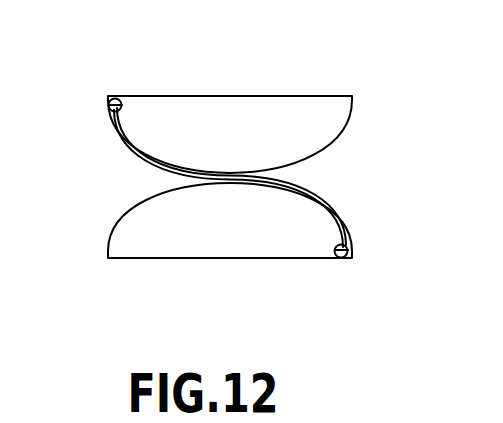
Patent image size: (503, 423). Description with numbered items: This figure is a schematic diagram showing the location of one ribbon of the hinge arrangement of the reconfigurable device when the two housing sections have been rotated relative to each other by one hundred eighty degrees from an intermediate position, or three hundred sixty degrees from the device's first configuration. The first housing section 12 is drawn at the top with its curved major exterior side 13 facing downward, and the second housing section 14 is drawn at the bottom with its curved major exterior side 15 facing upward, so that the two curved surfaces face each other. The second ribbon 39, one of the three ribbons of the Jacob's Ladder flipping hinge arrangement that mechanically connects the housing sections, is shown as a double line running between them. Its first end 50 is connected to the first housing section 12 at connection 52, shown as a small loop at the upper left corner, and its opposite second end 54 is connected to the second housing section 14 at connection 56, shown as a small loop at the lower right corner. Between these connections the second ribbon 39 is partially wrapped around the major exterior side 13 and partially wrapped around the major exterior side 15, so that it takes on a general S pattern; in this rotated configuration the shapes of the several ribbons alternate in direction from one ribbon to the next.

The first housing section 12 is at (269, 97).
The major exterior side 13 is at (338, 133).
The second housing section 14 is at (213, 254).
The major exterior side 15 is at (124, 221).
The second ribbon 39 is at (130, 144).
The first end 50 is at (110, 102).
The connection 52 is at (113, 112).
The second end 54 is at (350, 246).
The connection 56 is at (350, 254).